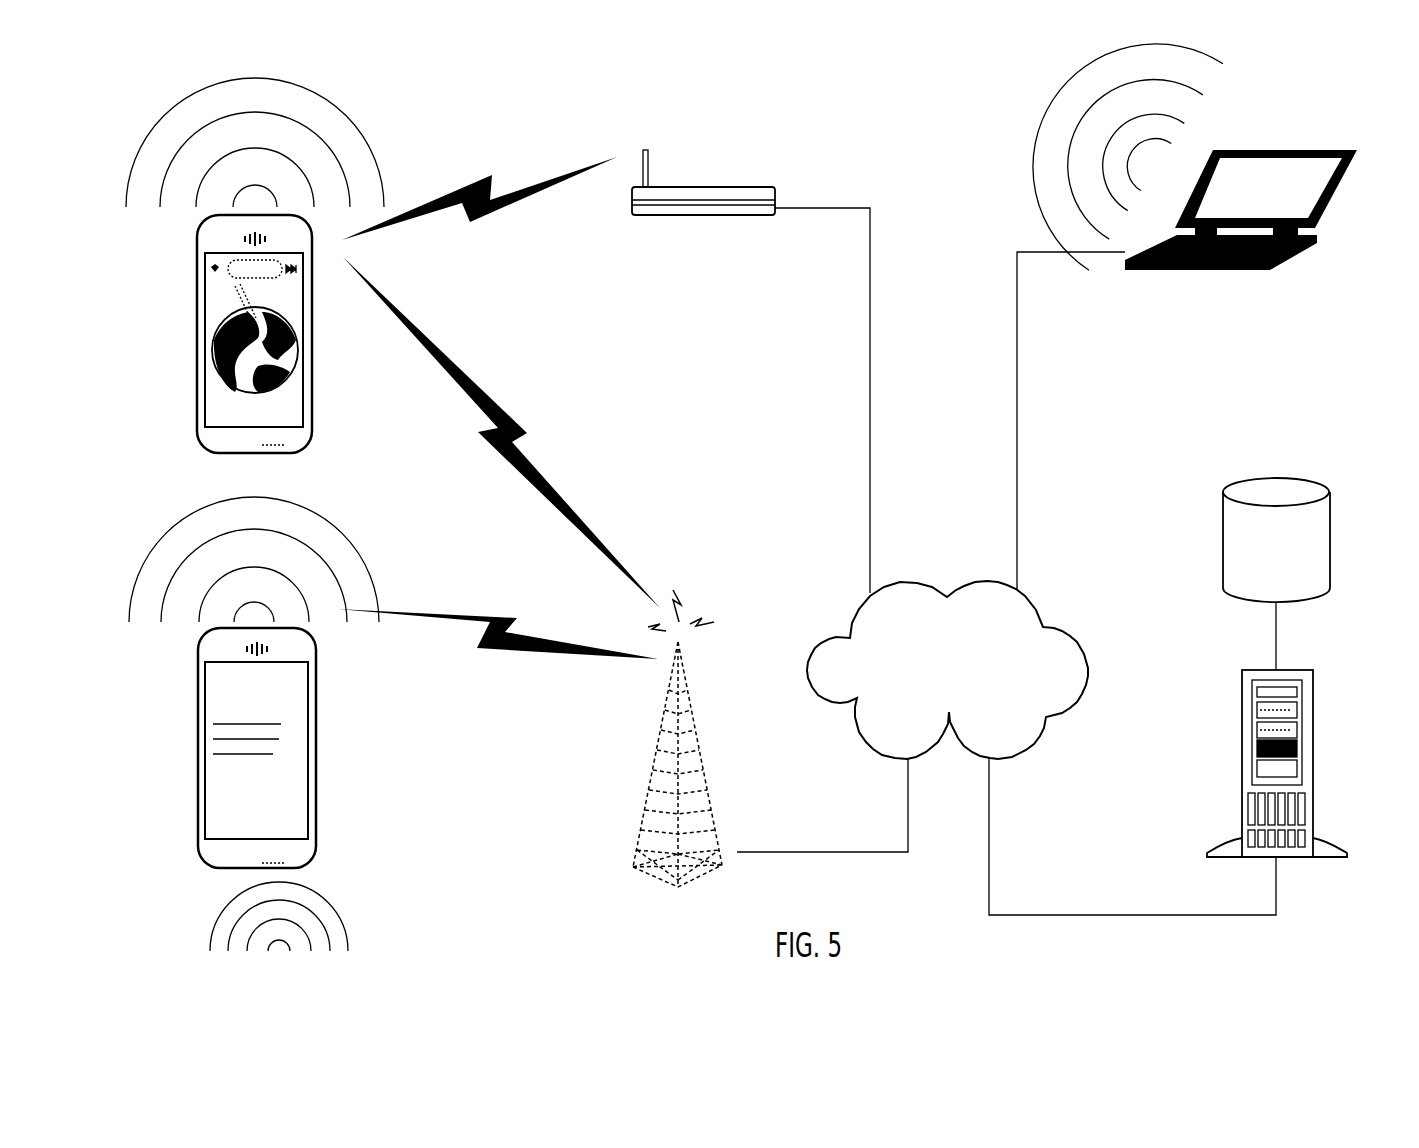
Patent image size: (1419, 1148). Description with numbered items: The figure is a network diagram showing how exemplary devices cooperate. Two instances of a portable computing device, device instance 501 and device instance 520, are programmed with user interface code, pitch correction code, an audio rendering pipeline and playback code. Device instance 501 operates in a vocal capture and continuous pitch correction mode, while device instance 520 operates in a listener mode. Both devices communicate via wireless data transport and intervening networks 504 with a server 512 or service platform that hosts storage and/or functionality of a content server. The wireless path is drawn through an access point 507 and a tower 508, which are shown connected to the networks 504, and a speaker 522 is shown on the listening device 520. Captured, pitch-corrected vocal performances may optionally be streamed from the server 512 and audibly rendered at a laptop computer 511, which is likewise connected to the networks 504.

The device instance 501 is at (316, 805).
The networks 504 is at (1028, 684).
The wireless access point / router 507 is at (687, 215).
The cellular tower / base station 508 is at (702, 712).
The laptop computer 511 is at (1173, 272).
The server 512 is at (1308, 747).
The device instance 520 is at (197, 370).
The speaker 522 is at (231, 241).